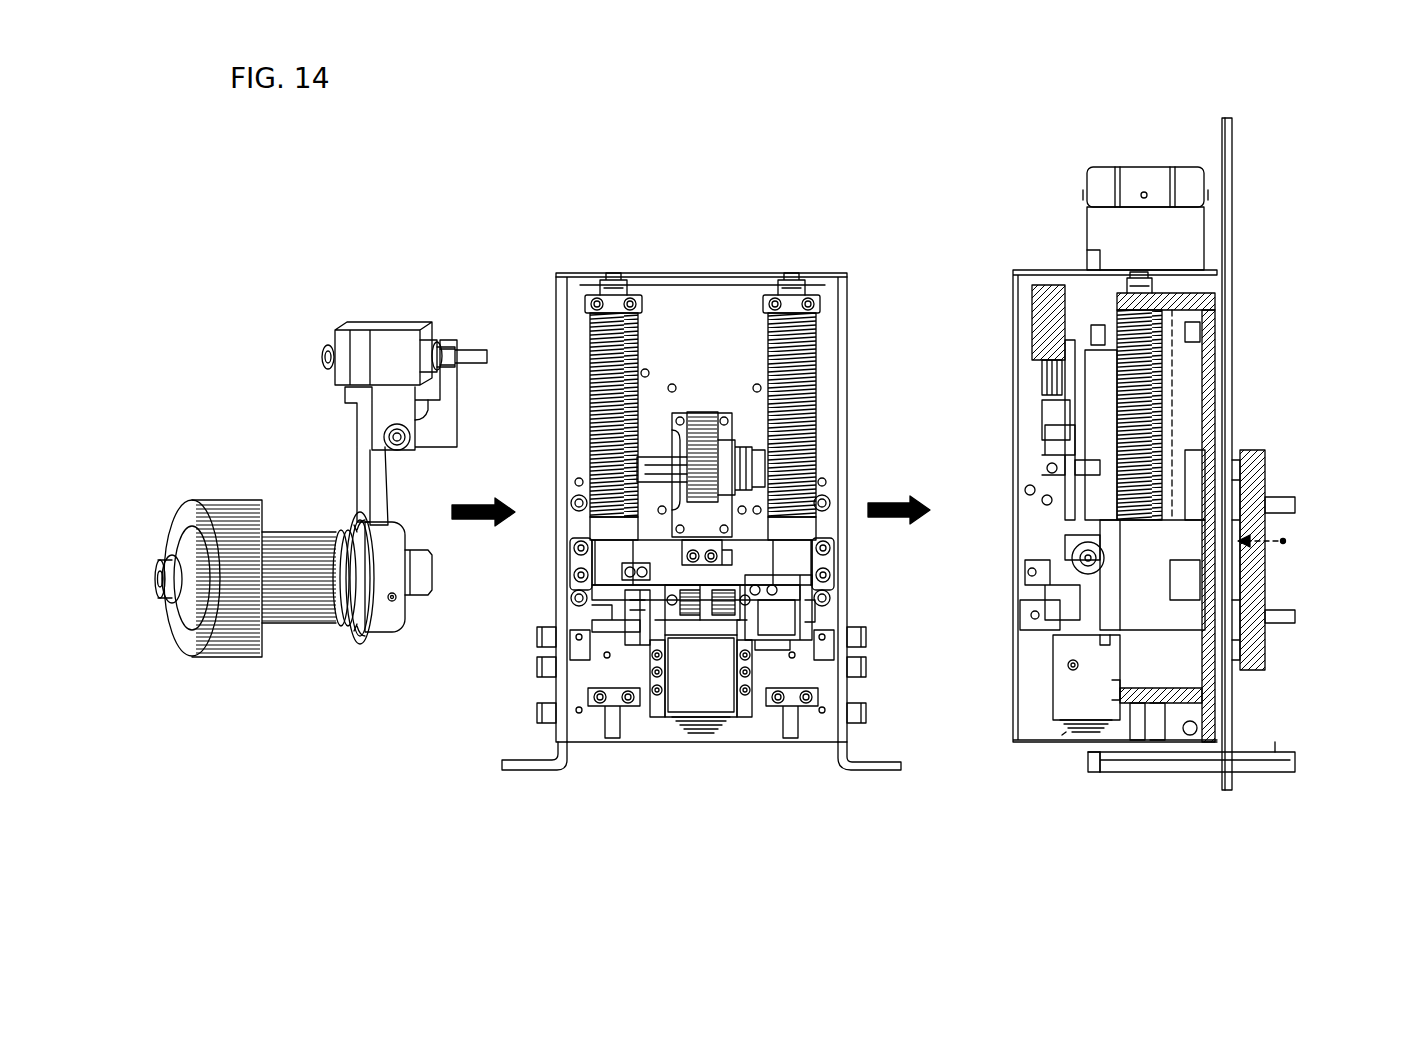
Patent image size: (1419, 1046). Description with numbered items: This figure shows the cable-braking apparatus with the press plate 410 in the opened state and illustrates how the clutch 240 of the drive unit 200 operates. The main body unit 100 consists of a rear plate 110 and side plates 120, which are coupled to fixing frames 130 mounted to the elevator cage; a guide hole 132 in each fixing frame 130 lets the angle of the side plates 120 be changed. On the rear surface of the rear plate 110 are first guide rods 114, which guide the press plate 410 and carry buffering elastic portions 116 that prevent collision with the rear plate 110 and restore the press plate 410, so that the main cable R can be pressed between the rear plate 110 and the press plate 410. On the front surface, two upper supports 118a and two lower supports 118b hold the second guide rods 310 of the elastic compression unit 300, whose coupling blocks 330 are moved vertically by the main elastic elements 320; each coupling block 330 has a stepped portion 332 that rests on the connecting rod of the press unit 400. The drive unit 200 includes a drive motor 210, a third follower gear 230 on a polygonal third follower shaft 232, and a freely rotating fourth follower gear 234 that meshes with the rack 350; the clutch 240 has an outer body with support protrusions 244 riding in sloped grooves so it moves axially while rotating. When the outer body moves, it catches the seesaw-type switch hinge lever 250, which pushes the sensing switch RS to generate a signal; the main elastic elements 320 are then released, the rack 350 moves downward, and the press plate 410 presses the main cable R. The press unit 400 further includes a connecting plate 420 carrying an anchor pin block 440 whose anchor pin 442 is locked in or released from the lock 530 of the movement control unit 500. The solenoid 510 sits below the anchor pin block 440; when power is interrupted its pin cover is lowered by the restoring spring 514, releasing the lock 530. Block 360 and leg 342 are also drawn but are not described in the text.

The sensing switch RS is at (385, 350).
The switch hinge lever 250 is at (427, 430).
The third follower gear 230 is at (220, 657).
The fourth follower gear 234 is at (300, 610).
The third follower shaft 232 is at (424, 586).
The clutch 240 is at (399, 630).
The support protrusions 244 is at (423, 570).
The side plates 120 is at (847, 303).
The rear plate 110 is at (705, 297).
The upper supports 118a is at (790, 297).
The lower supports 118b is at (790, 700).
The main elastic element 320 is at (817, 362).
The coupling blocks 330 is at (793, 525).
The anchor pin block 440 is at (720, 547).
The connecting plate 420 is at (593, 560).
The press unit 400 is at (576, 596).
The anchor pin 442 is at (648, 640).
The lock 530 is at (740, 615).
The movement control unit 500 is at (668, 727).
The solenoid 510 is at (698, 702).
The second guide rods 310 is at (797, 672).
The main cable R is at (1233, 158).
The drive unit 200 is at (1082, 216).
The drive motor 210 is at (1138, 180).
The main body unit 100 is at (1237, 320).
The elastic compression unit 300 is at (1168, 404).
The support block 360 is at (1180, 602).
The rack 350 is at (1192, 500).
The buffering elastic portions 116 is at (1210, 688).
The press plate 410 is at (1267, 468).
The first guide rods 114 is at (1288, 615).
The stepped portion 332 is at (1243, 566).
The fixing frames 130 is at (1280, 710).
The guide hole 132 is at (1278, 752).
The restoring spring 514 is at (1068, 735).
The support leg 342 is at (1162, 703).